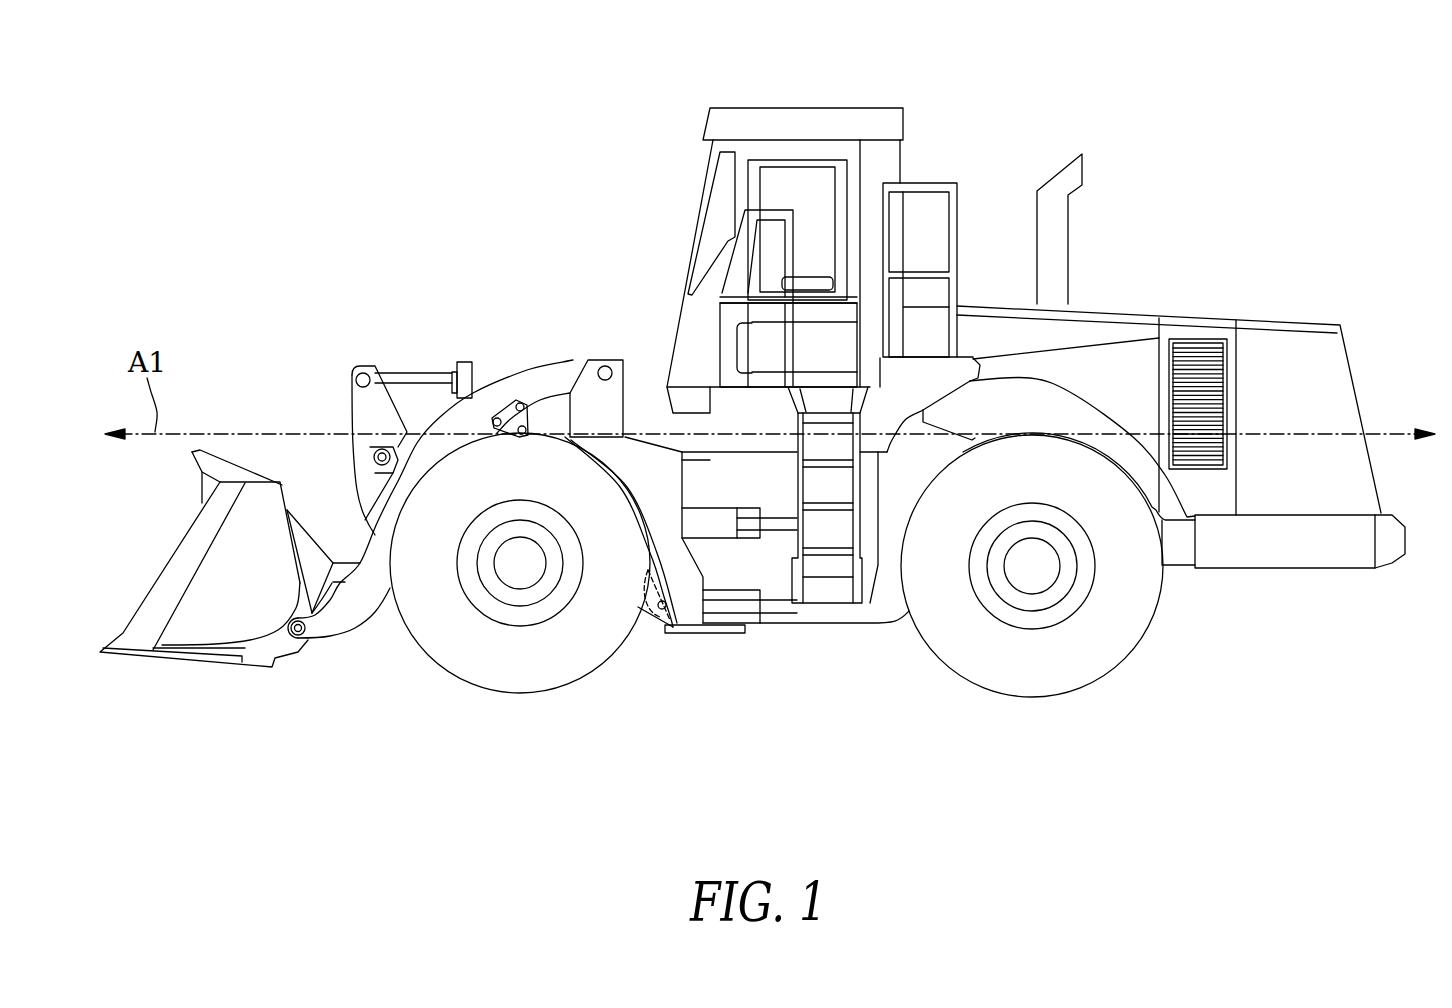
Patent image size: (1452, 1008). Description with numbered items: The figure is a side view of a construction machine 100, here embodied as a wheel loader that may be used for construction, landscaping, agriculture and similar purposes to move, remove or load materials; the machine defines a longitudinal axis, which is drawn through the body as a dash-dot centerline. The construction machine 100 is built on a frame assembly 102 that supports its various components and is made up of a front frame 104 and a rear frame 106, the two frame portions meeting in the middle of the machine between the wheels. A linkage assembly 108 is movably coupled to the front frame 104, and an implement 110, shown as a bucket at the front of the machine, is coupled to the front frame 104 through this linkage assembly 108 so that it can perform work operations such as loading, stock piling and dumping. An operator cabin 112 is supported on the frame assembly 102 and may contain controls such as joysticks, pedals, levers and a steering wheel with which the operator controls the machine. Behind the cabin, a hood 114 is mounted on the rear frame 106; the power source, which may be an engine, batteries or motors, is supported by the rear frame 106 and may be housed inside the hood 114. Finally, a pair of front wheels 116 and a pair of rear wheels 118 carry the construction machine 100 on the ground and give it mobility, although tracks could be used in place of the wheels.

The construction machine 100 is at (263, 80).
The frame assembly 102 is at (908, 742).
The front frame 104 is at (676, 651).
The rear frame 106 is at (886, 636).
The linkage assembly 108 is at (332, 400).
The implement 110 is at (218, 610).
The operator cabin 112 is at (800, 107).
The hood 114 is at (1290, 355).
The front wheels 116 is at (462, 690).
The rear wheels 118 is at (1027, 675).